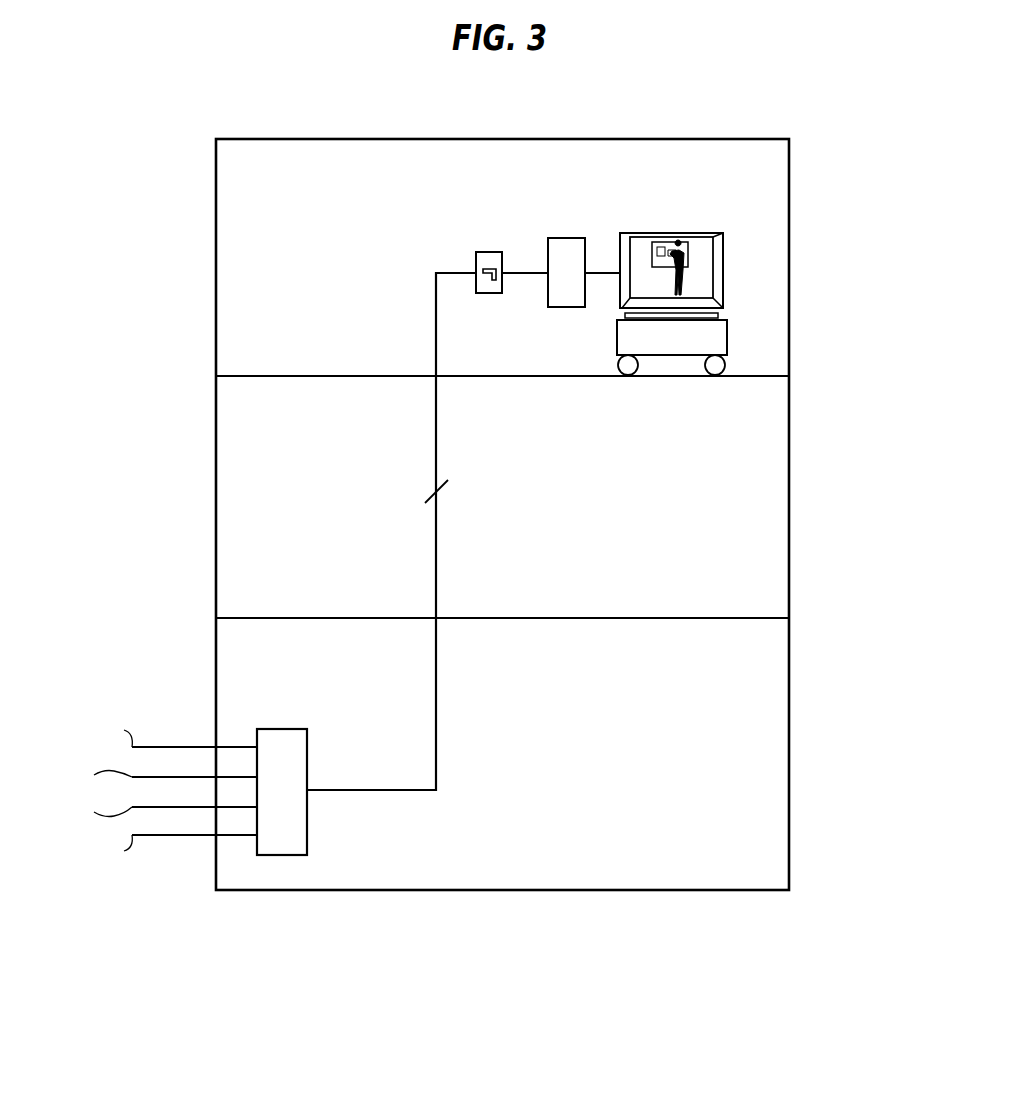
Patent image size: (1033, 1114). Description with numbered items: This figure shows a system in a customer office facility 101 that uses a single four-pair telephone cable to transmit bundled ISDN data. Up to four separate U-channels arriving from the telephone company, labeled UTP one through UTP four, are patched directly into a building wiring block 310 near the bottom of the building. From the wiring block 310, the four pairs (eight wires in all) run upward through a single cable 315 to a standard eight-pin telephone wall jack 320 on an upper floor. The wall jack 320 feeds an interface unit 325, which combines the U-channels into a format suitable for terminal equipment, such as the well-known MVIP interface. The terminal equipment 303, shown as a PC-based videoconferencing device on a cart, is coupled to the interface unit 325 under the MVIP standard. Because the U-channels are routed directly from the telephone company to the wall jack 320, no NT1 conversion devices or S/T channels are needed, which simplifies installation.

The customer office facility 101 is at (835, 873).
The terminal equipment 303 is at (683, 232).
The building wiring block 310 is at (308, 825).
The single cable 315 is at (437, 540).
The telephone wall jack 320 is at (476, 265).
The interface unit 325 is at (569, 238).